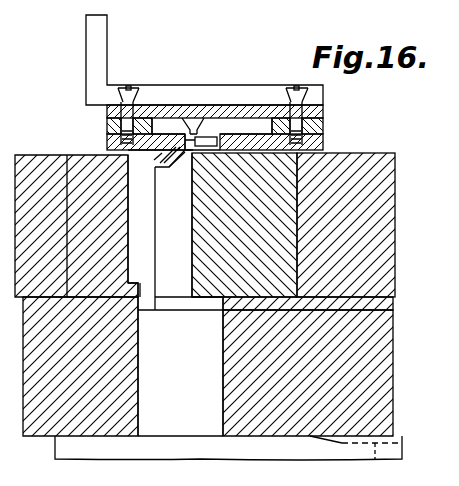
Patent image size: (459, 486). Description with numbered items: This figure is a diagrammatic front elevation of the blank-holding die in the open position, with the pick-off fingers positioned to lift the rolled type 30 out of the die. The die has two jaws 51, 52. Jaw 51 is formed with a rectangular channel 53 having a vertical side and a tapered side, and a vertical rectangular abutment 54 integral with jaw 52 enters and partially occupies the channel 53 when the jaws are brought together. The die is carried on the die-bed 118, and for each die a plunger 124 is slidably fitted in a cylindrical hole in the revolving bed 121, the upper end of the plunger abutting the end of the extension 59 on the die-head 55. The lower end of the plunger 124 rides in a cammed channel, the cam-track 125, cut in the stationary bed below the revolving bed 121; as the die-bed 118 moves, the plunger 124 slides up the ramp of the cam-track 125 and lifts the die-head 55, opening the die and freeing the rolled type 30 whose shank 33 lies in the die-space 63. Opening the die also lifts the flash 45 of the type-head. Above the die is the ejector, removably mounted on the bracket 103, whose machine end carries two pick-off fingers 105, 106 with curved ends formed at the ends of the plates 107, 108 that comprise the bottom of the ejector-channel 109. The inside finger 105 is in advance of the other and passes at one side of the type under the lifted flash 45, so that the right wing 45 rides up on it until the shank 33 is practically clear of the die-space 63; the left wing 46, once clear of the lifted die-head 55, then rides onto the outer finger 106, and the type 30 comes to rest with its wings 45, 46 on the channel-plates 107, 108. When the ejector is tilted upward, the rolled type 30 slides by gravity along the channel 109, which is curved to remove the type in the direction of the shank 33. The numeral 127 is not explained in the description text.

The bracket arm 127 is at (204, 52).
The bracket 103 is at (250, 85).
The ejector-channel 109 is at (197, 127).
The channel-plate 108 is at (107, 140).
The channel-plate 107 is at (323, 141).
The pick-off finger 106 is at (169, 126).
The pick-off finger 105 is at (218, 137).
The flash 45 is at (208, 137).
The jaw 51 is at (72, 155).
The die-bed 118 is at (381, 153).
The abutment 54 is at (173, 230).
The left wing 46 is at (160, 160).
The rolled type 30 is at (152, 161).
The die-space 63 is at (176, 160).
The shank 33 is at (185, 160).
The die-head 55 is at (140, 219).
The channel 53 is at (138, 283).
The revolving bed 121 is at (393, 355).
The extension 59 is at (152, 310).
The jaw 52 is at (208, 298).
The plunger 124 is at (180, 373).
The cam-track 125 is at (375, 459).